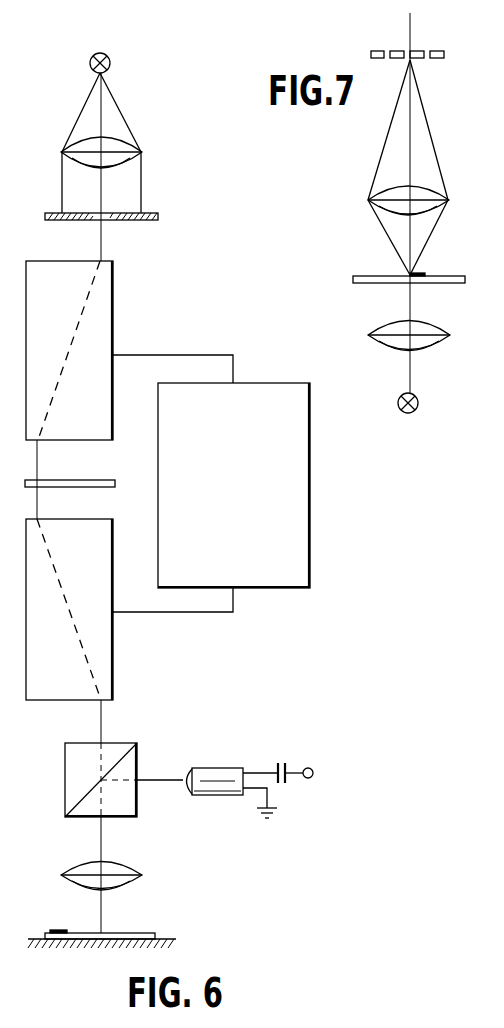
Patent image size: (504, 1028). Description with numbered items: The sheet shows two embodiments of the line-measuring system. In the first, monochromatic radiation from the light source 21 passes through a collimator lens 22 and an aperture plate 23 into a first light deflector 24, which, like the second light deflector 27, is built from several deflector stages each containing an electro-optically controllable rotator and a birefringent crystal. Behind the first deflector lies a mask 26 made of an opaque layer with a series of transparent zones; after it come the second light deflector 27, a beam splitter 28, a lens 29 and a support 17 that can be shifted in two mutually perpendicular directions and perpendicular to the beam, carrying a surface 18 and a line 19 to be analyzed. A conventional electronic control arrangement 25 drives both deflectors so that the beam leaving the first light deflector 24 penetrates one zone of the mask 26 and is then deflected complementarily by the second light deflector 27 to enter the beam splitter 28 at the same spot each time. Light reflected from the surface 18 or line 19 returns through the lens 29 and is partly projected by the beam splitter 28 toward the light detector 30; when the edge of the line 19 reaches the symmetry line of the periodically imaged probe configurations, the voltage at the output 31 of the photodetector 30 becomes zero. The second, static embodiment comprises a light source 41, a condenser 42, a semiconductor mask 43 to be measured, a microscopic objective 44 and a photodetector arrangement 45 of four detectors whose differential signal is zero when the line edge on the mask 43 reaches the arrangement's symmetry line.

In FIG. 6, the support 17 is at (167, 940).
In FIG. 6, the surface 18 is at (135, 933).
In FIG. 6, the line 19 is at (53, 930).
In FIG. 6, the light source 21 is at (90, 63).
In FIG. 6, the collimator lens 22 is at (122, 146).
In FIG. 6, the aperture plate 23 is at (152, 213).
In FIG. 6, the first light deflector 24 is at (100, 335).
In FIG. 6, the electronic control arrangement 25 is at (250, 504).
In FIG. 6, the mask 26 is at (103, 473).
In FIG. 6, the second light deflector 27 is at (108, 653).
In FIG. 6, the beam splitter 28 is at (72, 774).
In FIG. 6, the lens 29 is at (83, 870).
In FIG. 6, the light detector 30 is at (230, 772).
In FIG. 6, the output 31 is at (308, 768).
In FIG. 7, the light source 41 is at (418, 397).
In FIG. 7, the condenser 42 is at (435, 330).
In FIG. 7, the semiconductor mask 43 is at (450, 278).
In FIG. 7, the microscopic objective 44 is at (432, 200).
In FIG. 7, the photodetector arrangement 45 is at (422, 46).